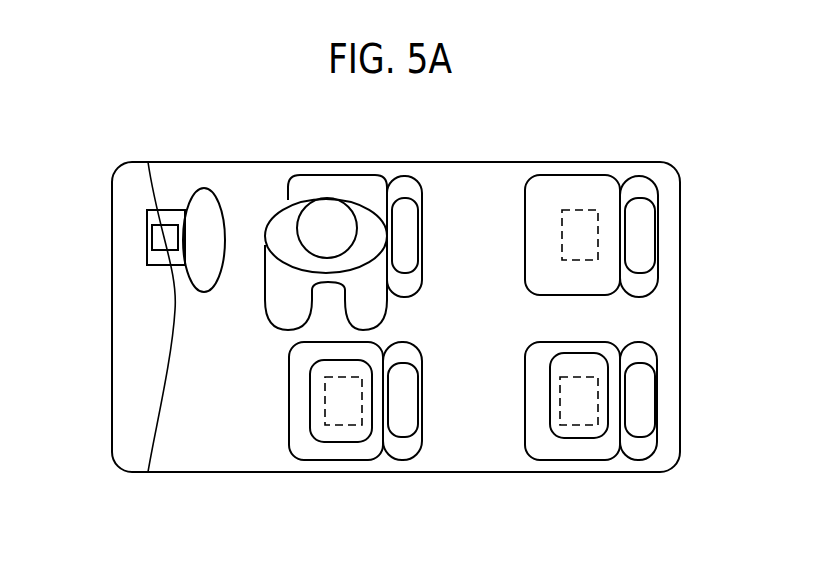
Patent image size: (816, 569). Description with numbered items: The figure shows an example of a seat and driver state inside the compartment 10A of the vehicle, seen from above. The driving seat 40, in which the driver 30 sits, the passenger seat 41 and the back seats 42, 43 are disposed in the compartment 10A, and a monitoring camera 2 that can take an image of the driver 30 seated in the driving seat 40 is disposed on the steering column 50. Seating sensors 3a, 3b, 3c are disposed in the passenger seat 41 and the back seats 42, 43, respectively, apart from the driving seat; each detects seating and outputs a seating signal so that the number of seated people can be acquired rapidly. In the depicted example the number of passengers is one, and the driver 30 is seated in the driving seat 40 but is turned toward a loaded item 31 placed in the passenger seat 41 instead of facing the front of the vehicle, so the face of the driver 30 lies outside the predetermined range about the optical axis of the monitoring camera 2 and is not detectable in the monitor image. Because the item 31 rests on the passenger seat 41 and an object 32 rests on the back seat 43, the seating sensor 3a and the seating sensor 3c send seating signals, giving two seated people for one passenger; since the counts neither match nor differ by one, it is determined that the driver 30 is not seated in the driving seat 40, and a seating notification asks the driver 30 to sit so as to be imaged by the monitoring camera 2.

The compartment 10A is at (183, 455).
The monitoring camera 2 is at (160, 228).
The steering column 50 is at (160, 252).
The driver 30 is at (320, 217).
The item 31 is at (310, 392).
The object 32 is at (550, 392).
The seating sensor 3a is at (338, 413).
The seating sensor 3b is at (575, 200).
The seating sensor 3c is at (575, 413).
The driving seat 40 is at (403, 188).
The passenger seat 41 is at (405, 443).
The back seat 42 is at (643, 188).
The back seat 43 is at (638, 443).